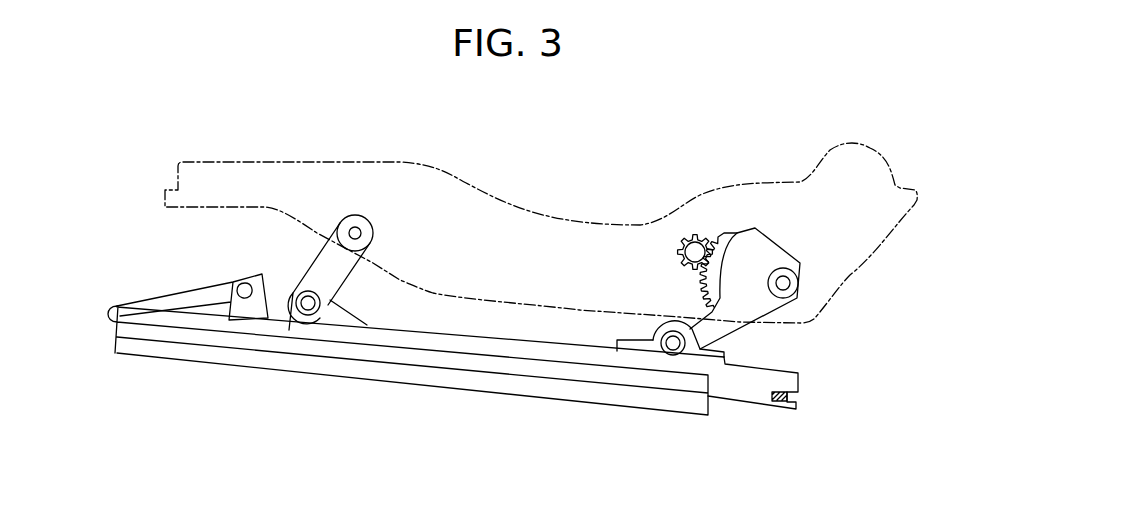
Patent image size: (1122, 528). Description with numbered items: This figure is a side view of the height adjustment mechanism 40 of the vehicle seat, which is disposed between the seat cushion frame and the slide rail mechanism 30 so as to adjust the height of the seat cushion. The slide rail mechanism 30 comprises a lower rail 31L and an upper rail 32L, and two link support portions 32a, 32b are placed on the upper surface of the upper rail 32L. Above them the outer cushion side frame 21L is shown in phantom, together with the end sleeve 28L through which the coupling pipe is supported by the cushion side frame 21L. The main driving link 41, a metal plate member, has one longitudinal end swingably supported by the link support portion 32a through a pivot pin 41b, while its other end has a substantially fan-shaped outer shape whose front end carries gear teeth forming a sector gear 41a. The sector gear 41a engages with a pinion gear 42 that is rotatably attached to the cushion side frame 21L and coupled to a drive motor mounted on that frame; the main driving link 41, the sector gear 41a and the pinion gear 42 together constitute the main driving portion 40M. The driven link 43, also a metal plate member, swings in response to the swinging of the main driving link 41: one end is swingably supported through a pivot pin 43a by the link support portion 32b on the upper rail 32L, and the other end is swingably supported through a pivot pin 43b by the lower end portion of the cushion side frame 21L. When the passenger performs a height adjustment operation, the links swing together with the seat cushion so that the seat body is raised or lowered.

The cushion side frame 21L is at (463, 190).
The end sleeve 28L is at (835, 284).
The slide rail mechanism 30 is at (453, 375).
The lower rail 31L is at (570, 392).
The upper rail 32L is at (472, 347).
The link support portion 32a is at (652, 341).
The link support portion 32b is at (340, 314).
The height adjustment mechanism 40 is at (268, 267).
The main driving portion 40M is at (725, 279).
The main driving link 41 is at (768, 248).
The sector gear 41a is at (728, 242).
The pivot pin 41b is at (673, 344).
The pinion gear 42 is at (680, 242).
The driven link 43 is at (293, 274).
The pivot pin 43a is at (308, 312).
The pivot pin 43b is at (354, 226).